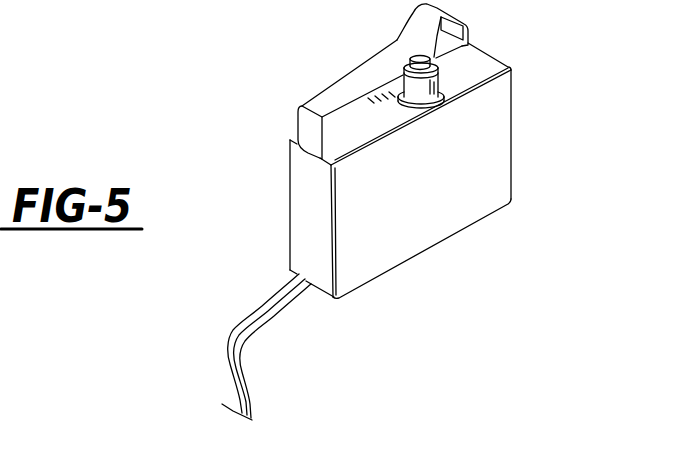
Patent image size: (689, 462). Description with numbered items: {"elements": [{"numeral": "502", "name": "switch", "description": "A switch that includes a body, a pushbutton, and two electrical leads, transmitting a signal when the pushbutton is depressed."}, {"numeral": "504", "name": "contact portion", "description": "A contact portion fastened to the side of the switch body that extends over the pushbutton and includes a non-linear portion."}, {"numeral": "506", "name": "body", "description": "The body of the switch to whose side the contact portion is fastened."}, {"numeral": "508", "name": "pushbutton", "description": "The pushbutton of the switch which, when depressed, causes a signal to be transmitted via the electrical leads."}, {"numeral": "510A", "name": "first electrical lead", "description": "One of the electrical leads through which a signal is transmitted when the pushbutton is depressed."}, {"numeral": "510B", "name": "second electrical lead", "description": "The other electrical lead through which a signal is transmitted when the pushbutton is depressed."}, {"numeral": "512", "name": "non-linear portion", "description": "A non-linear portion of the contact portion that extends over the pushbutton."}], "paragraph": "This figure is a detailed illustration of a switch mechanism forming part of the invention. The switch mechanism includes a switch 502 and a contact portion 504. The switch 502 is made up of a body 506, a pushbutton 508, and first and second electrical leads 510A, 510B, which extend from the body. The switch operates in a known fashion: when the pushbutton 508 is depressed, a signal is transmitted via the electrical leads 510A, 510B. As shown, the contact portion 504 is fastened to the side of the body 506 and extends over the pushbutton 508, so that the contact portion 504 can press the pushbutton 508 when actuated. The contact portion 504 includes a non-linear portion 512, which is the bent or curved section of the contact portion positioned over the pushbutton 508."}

The battery pack assembly 502 is at (355, 212).
The clip 504 is at (290, 68).
The housing 506 is at (512, 157).
The terminal post 508 is at (440, 82).
The cable 510A is at (229, 340).
The cable 510B is at (252, 405).
The tab 512 is at (420, 25).